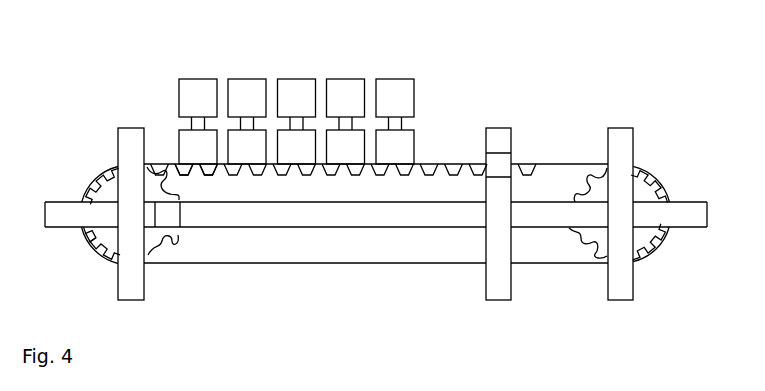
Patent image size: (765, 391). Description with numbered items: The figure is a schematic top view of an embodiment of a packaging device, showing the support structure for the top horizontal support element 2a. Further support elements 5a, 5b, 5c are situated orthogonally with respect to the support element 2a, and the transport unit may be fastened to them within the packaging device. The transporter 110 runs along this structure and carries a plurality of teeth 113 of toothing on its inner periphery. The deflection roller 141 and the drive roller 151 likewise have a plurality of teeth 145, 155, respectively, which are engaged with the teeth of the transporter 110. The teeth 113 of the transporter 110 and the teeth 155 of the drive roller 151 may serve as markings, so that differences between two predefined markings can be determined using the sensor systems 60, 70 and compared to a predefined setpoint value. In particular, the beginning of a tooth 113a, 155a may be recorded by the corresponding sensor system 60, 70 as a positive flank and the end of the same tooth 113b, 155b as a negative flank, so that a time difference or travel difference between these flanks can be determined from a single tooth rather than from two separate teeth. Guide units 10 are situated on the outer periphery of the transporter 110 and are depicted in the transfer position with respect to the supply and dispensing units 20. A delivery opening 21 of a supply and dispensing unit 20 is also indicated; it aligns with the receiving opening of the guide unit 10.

The top horizontal support element 2a is at (50, 215).
The further support element 5a is at (132, 140).
The further support element 5b is at (500, 287).
The further support element 5c is at (622, 287).
The guide unit 10 is at (395, 150).
The supply and dispensing unit 20 is at (395, 100).
The delivery opening 21 is at (297, 122).
The sensor system 60 is at (168, 215).
The sensor system 70 is at (499, 165).
The transporter 110 is at (253, 263).
The teeth 113 is at (453, 168).
The beginning of a tooth 113a is at (176, 172).
The end of a tooth 113b is at (212, 166).
The deflection roller 141 is at (640, 177).
The teeth 145 is at (653, 248).
The drive roller 151 is at (112, 190).
The teeth 155 is at (61, 220).
The beginning of a tooth 155a is at (107, 263).
The end of a tooth 155b is at (98, 255).